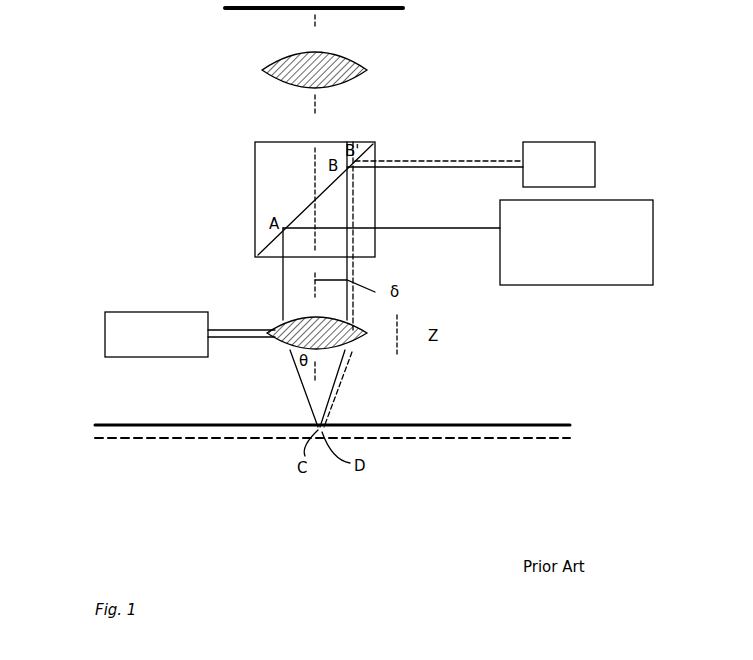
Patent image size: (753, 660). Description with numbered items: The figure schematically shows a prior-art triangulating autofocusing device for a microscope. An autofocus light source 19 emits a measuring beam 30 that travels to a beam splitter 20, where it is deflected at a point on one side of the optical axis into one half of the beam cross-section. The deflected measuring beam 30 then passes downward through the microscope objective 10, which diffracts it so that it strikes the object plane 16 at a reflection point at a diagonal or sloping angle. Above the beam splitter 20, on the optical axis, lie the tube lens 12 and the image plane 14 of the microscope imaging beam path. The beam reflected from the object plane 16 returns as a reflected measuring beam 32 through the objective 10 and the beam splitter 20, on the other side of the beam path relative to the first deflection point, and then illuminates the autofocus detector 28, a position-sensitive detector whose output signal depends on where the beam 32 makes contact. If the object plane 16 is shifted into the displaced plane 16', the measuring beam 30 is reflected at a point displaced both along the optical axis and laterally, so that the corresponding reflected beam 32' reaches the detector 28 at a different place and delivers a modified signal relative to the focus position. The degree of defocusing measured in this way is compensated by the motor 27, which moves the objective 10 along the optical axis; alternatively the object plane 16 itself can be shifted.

The objective 10 is at (283, 328).
The tube lens 12 is at (278, 61).
The image plane 14 is at (372, 9).
The object plane 16 is at (325, 402).
The displaced object plane 16' is at (307, 456).
The autofocus light source 19 is at (638, 200).
The beam splitter 20 is at (258, 186).
The motor 27 is at (155, 312).
The autofocus detector 28 is at (563, 142).
The measuring beam 30 is at (428, 230).
The reflected measuring beam 32 is at (421, 284).
The displaced reflected measuring beam 32' is at (423, 272).